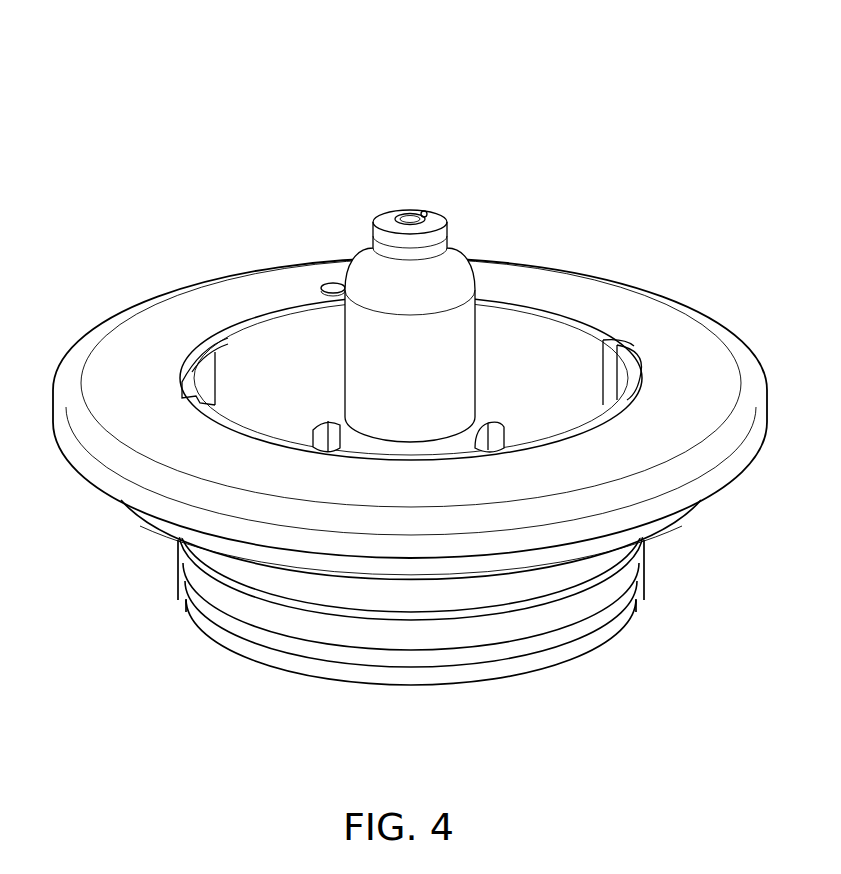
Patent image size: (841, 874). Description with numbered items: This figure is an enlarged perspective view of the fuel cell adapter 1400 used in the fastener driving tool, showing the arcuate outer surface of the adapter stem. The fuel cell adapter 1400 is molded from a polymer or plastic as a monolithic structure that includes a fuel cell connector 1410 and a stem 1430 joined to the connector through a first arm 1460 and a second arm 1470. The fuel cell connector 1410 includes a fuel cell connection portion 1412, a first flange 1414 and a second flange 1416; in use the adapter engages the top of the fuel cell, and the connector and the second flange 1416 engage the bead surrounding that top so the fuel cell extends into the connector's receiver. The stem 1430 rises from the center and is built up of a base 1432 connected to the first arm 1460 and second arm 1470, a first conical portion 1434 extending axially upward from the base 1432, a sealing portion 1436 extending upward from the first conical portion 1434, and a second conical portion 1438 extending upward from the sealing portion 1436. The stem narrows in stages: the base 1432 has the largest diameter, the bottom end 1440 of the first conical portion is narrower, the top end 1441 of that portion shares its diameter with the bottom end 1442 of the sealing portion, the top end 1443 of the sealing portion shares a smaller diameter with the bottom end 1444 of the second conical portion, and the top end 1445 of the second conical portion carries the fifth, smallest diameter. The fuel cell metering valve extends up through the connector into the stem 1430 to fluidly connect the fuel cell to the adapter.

The fuel cell adapter 1400 is at (176, 86).
The fuel cell connector 1410 is at (648, 566).
The fuel cell connection portion 1412 is at (218, 635).
The first flange 1414 is at (736, 372).
The second flange 1416 is at (160, 538).
The stem 1430 is at (337, 343).
The base 1432 is at (478, 452).
The first conical portion 1434 is at (488, 272).
The sealing portion 1436 is at (325, 284).
The second conical portion 1438 is at (427, 212).
The bottom end of the first conical portion 1440 is at (330, 412).
The top end of the first conical portion 1441 is at (313, 259).
The bottom end of the sealing portion 1442 is at (460, 300).
The top end of the sealing portion 1443 is at (372, 236).
The bottom end of the second conical portion 1444 is at (448, 236).
The top end of the second conical portion 1445 is at (394, 216).
The first arm 1460 is at (615, 350).
The second arm 1470 is at (318, 448).